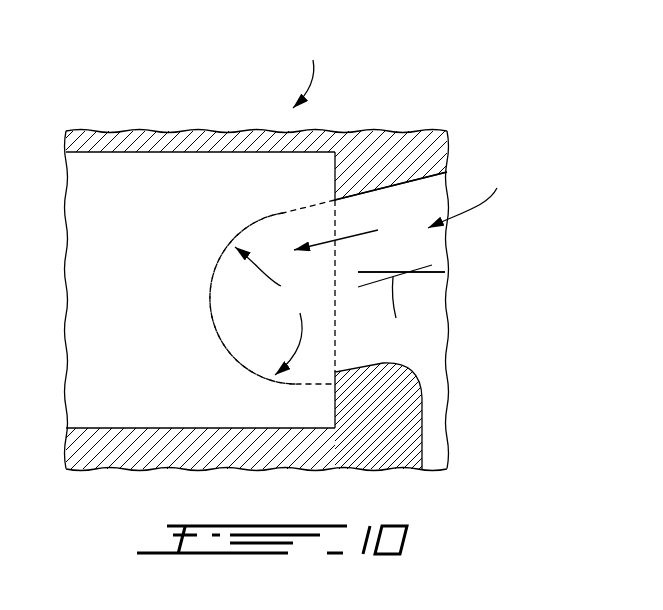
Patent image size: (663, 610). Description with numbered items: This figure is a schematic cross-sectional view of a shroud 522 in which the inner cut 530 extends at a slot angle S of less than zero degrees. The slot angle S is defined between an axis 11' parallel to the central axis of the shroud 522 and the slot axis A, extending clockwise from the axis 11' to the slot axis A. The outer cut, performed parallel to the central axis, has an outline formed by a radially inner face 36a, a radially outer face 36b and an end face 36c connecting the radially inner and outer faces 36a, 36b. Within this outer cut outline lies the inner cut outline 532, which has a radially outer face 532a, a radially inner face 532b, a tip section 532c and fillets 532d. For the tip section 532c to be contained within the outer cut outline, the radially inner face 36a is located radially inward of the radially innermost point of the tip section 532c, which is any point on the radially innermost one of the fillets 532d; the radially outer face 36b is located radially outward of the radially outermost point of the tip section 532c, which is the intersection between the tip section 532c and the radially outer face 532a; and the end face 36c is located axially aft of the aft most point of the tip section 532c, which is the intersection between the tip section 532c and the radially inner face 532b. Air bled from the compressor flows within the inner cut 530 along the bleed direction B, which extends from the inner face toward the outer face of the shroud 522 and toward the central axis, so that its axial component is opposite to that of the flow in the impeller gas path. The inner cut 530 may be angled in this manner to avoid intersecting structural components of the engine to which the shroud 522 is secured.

The radially inner face 36a is at (120, 430).
The radially outer face 36b is at (140, 130).
The end face 36c is at (352, 168).
The shroud 522 is at (313, 71).
The inner cut 530 is at (472, 197).
The inner cut outline 532 is at (236, 358).
The radially outer face 532a is at (407, 180).
The radially inner face 532b is at (353, 373).
The tip section 532c is at (218, 322).
The fillets 532d is at (281, 311).
The axis 11' is at (426, 291).
The bleed direction B is at (323, 243).
The slot angle S is at (393, 277).
The slot axis A is at (398, 310).